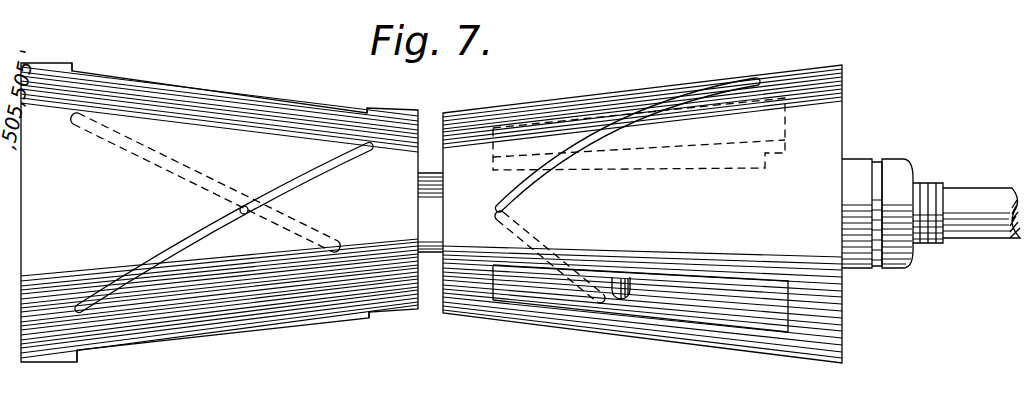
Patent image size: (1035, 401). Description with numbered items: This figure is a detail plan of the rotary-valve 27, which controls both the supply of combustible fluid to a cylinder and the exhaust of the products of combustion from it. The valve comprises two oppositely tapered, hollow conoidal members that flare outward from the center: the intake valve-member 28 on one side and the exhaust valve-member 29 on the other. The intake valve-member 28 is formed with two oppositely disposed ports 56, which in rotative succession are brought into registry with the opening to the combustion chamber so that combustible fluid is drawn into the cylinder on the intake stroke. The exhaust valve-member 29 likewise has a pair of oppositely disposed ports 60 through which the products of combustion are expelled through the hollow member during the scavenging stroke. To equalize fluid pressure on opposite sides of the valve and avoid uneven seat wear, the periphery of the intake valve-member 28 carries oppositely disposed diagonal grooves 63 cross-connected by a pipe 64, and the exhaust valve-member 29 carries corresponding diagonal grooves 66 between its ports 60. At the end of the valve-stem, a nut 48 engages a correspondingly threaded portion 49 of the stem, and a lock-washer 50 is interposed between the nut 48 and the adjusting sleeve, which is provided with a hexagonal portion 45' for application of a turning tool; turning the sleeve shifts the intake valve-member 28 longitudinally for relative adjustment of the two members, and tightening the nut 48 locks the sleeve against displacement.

The rotary-valve 27 is at (444, 165).
The intake valve-member 28 is at (642, 214).
The exhaust valve-member 29 is at (219, 212).
The hexagonal portion 45' is at (869, 199).
The nut 48 is at (906, 167).
The threaded portion 49 is at (938, 196).
The lock-washer 50 is at (878, 270).
The ports 56 is at (753, 290).
The ports 60 is at (241, 96).
The diagonal grooves 63 is at (533, 173).
The pipe 64 is at (624, 278).
The diagonal grooves 66 is at (283, 188).